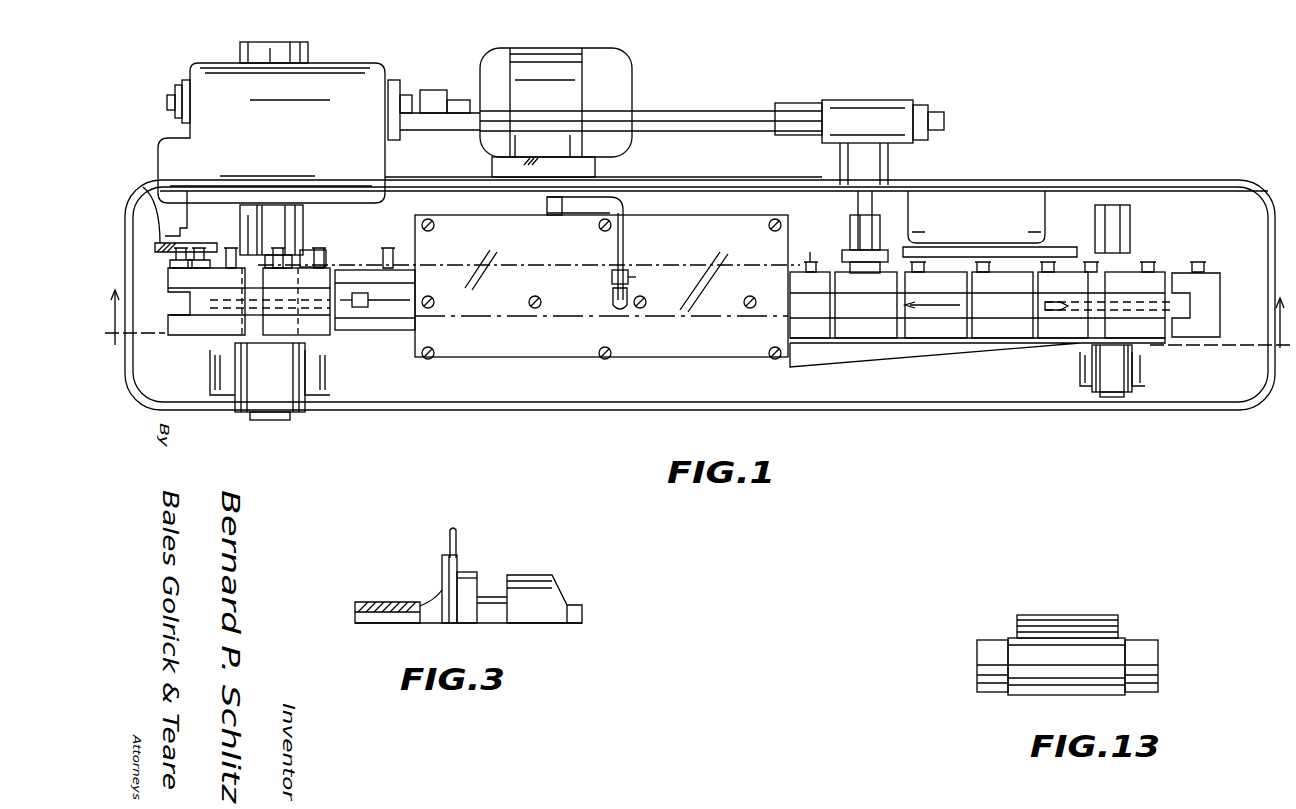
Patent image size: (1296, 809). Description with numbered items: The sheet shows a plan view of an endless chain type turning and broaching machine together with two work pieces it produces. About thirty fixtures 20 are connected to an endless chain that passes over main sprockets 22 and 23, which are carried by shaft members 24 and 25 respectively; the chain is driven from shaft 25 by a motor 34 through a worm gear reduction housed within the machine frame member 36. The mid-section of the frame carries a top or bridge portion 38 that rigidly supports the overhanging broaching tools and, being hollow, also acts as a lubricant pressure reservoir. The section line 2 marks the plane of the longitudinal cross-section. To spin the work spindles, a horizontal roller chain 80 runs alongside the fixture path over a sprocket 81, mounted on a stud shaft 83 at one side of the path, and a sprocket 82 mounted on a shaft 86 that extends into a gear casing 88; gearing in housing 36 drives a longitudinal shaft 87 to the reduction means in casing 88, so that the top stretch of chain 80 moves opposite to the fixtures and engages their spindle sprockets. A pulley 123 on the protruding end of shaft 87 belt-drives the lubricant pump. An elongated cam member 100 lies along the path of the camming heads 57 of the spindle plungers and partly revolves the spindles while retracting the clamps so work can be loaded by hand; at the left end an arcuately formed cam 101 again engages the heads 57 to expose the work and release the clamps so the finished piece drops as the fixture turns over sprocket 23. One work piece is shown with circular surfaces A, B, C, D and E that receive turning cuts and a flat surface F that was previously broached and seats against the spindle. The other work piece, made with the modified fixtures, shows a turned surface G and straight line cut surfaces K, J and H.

In FIG. 1, the section line 2— 2 is at (696, 314).
In FIG. 1, the fixture 20 is at (195, 325).
In FIG. 1, the main sprocket 22 is at (1075, 310).
In FIG. 1, the main sprocket 23 is at (325, 343).
In FIG. 1, the shaft member 24 is at (1113, 394).
In FIG. 1, the shaft member 25 is at (272, 420).
In FIG. 1, the motor 34 is at (612, 70).
In FIG. 1, the machine frame member 36 is at (215, 80).
In FIG. 1, the top or bridge portion 38 is at (650, 352).
In FIG. 1, the camming head 57 is at (356, 250).
In FIG. 1, the roller chain 80 is at (667, 252).
In FIG. 1, the sprocket 81 is at (302, 262).
In FIG. 1, the sprocket 82 is at (880, 250).
In FIG. 1, the stud shaft 83 is at (285, 216).
In FIG. 1, the shaft 86 is at (860, 210).
In FIG. 1, the shaft 87 is at (742, 118).
In FIG. 1, the gear casing 88 is at (885, 105).
In FIG. 1, the elongated cam member 100 is at (1078, 218).
In FIG. 1, the arcuately formed cam 101 is at (164, 216).
In FIG. 1, the pulley 123 is at (935, 110).
In FIG. 3, the circular surface A is at (540, 575).
In FIG. 3, the circular surface B is at (468, 570).
In FIG. 3, the circular surface C is at (450, 532).
In FIG. 3, the circular surface D is at (445, 562).
In FIG. 3, the circular surface E is at (440, 568).
In FIG. 3, the flat surface F is at (525, 625).
In FIG. 13, the turned surface G is at (1068, 615).
In FIG. 13, the straight line cut surface H is at (977, 660).
In FIG. 13, the straight line cut surface J is at (992, 645).
In FIG. 13, the straight line cut surface K is at (1015, 628).